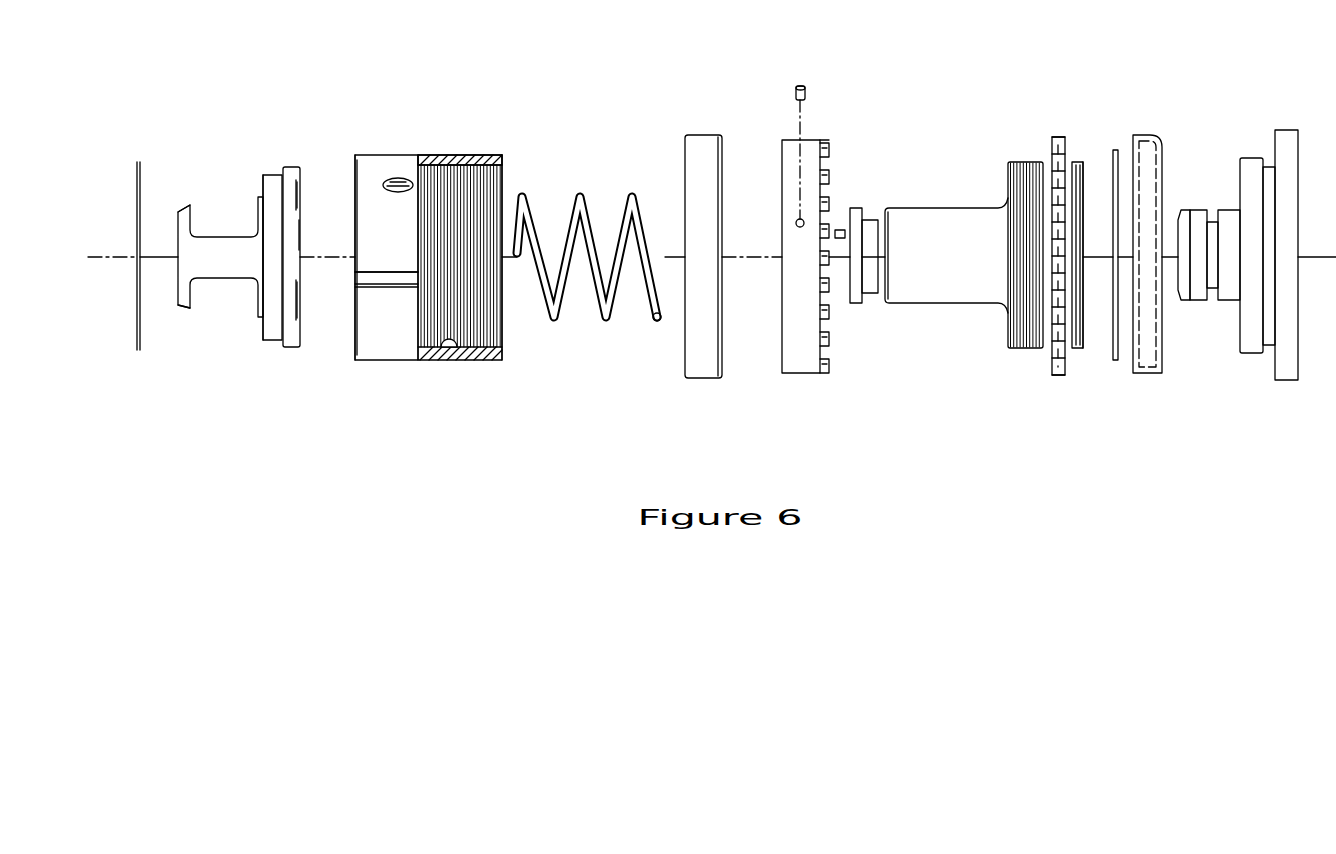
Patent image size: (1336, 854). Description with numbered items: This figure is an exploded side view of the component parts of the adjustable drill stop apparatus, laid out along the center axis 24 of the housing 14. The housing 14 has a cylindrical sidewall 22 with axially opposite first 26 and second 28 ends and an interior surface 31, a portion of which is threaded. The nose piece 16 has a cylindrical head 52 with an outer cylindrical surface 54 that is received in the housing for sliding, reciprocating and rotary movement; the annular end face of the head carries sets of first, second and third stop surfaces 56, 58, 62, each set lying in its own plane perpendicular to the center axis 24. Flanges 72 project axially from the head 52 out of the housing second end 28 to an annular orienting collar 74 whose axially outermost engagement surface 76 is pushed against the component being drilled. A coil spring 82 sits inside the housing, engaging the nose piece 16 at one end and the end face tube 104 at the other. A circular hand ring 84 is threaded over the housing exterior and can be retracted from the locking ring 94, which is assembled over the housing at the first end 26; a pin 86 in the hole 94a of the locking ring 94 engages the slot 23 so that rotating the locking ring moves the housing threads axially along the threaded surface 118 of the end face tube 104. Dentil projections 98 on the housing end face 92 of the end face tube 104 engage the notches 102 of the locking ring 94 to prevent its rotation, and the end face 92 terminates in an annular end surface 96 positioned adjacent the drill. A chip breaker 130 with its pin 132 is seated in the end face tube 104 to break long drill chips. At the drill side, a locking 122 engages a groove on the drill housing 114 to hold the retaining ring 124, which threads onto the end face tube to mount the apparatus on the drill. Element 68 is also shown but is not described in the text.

The housing 14 is at (480, 360).
The nose piece 16 is at (272, 340).
The cylindrical sidewall 22 is at (386, 345).
The slot 23 is at (368, 290).
The center axis 24 is at (162, 262).
The first end 26 is at (503, 172).
The second end 28 is at (355, 166).
The interior surface 31 is at (457, 355).
The cylindrical head 52 is at (272, 175).
The outer cylindrical surface 54 is at (291, 167).
The first stop surfaces 56 is at (300, 236).
The second stop surfaces 58 is at (300, 195).
The third stop surfaces 62 is at (300, 288).
The end cap disc 68 is at (138, 165).
The flanges 72 is at (222, 240).
The annular orienting collar 74 is at (180, 316).
The engagement surface 76 is at (179, 207).
The coil spring 82 is at (605, 323).
The circular hand ring 84 is at (700, 135).
The pin 86 is at (798, 86).
The housing end face 92 is at (1075, 162).
The locking ring 94 is at (792, 143).
The hole 94a is at (796, 223).
The annular end surface 96 is at (1085, 177).
The dentil projections 98 is at (1058, 137).
The notches 102 is at (833, 130).
The end face tube 104 is at (930, 285).
The drill housing 114 is at (1246, 150).
The threaded surface 118 is at (1028, 198).
The locking 122 is at (1116, 360).
The retaining ring 124 is at (1150, 373).
The chip breaker 130 is at (857, 303).
The pin 132 is at (840, 230).